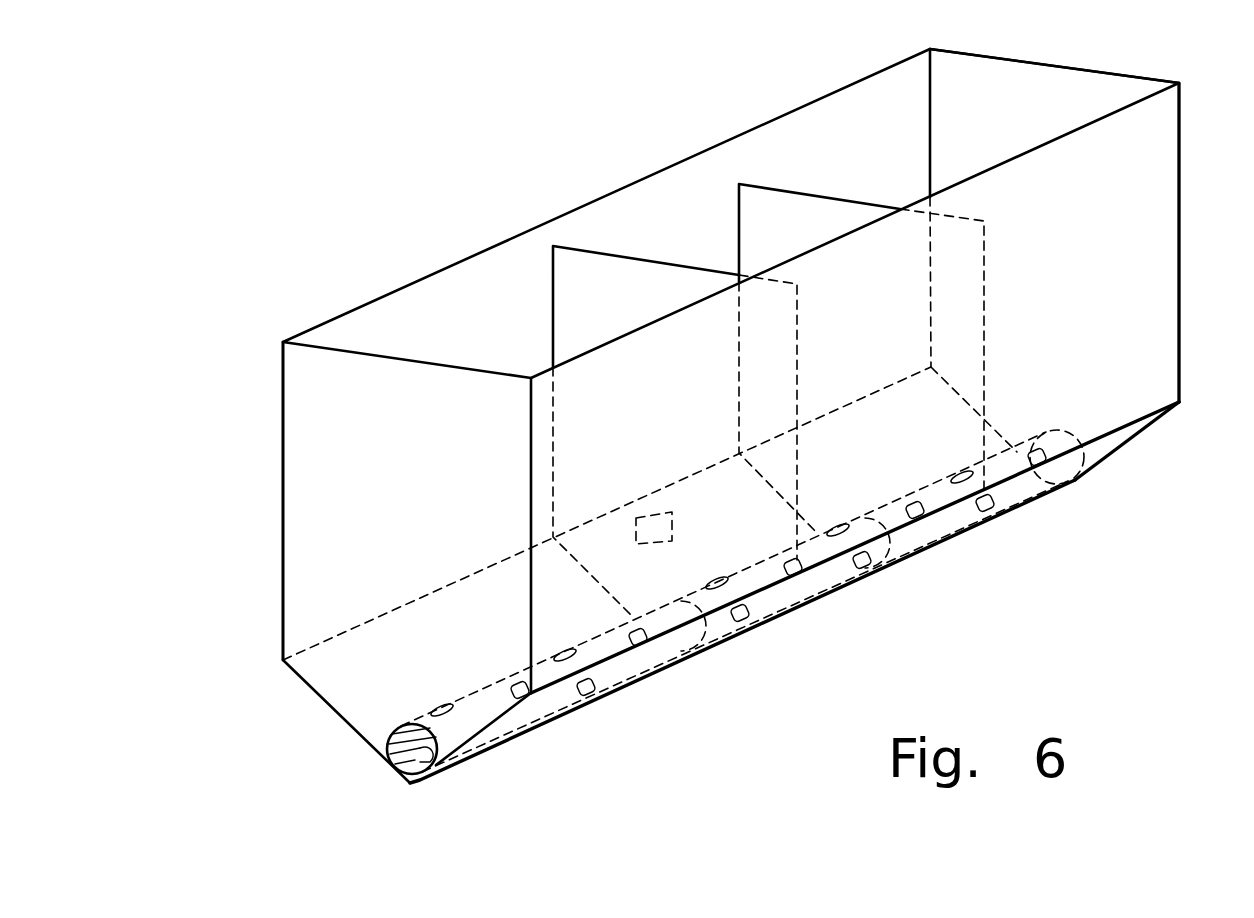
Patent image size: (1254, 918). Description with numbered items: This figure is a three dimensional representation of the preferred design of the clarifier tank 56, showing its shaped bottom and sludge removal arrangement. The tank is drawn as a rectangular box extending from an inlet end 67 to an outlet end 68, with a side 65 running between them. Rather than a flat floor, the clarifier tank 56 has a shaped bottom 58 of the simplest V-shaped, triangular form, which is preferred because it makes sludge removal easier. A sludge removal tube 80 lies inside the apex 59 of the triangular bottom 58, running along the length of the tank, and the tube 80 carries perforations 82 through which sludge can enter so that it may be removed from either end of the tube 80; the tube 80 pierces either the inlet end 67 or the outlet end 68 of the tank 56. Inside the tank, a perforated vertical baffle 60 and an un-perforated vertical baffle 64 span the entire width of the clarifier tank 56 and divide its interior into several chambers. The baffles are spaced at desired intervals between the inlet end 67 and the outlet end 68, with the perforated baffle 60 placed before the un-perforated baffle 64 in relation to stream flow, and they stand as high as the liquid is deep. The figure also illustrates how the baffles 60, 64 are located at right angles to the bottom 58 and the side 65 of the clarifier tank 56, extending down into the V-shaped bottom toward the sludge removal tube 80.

The clarifier tank 56 is at (373, 119).
The shaped bottom 58 is at (337, 713).
The apex 59 is at (410, 786).
The perforated vertical baffle 60 is at (587, 268).
The un-perforated vertical baffle 64 is at (777, 217).
The side 65 is at (957, 305).
The inlet end 67 is at (305, 462).
The outlet end 68 is at (1047, 92).
The sludge removal tube 80 is at (478, 685).
The perforations 82 is at (605, 668).